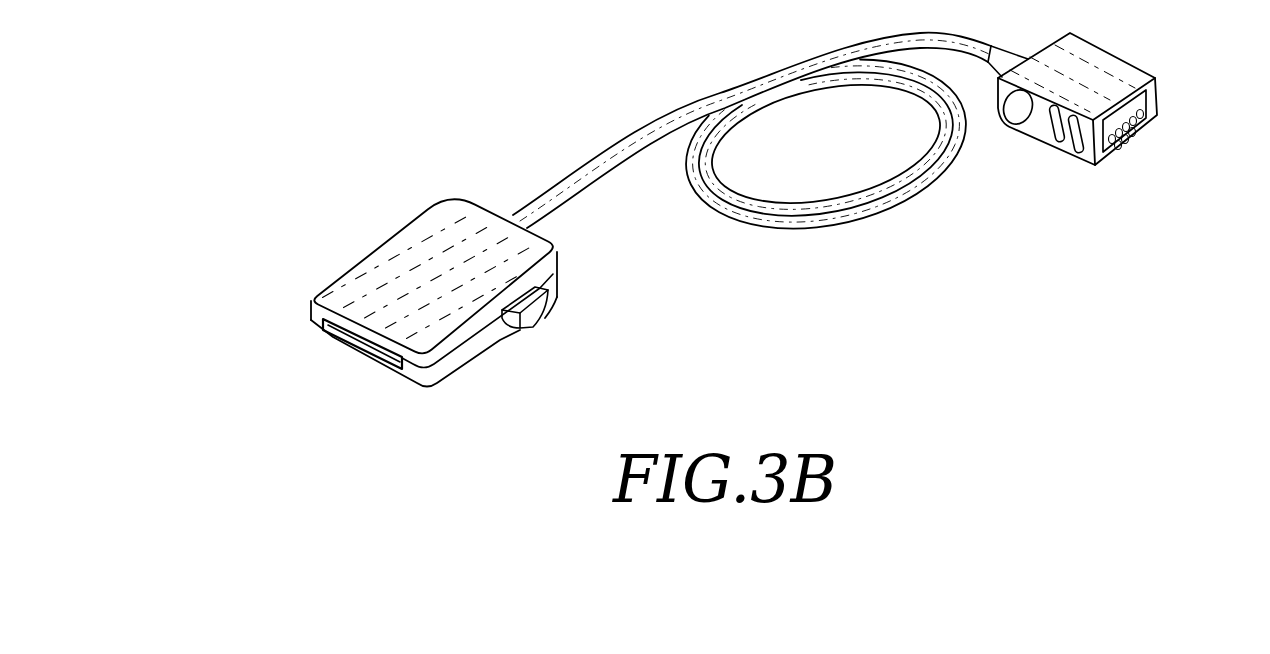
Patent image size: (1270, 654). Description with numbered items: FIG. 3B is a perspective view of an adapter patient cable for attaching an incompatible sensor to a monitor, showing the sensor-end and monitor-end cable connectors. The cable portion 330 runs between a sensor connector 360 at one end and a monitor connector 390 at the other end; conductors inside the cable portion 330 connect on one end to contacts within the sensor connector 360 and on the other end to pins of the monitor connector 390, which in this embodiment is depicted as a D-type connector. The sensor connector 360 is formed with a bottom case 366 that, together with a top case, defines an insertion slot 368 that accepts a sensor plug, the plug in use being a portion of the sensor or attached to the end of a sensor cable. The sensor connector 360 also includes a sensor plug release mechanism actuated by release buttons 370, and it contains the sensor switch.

The cable portion 330 is at (853, 222).
The sensor connector 360 is at (433, 296).
The bottom case 366 is at (382, 287).
The insertion slot 368 is at (325, 333).
The release buttons 370 is at (534, 316).
The monitor connector 390 is at (1113, 50).